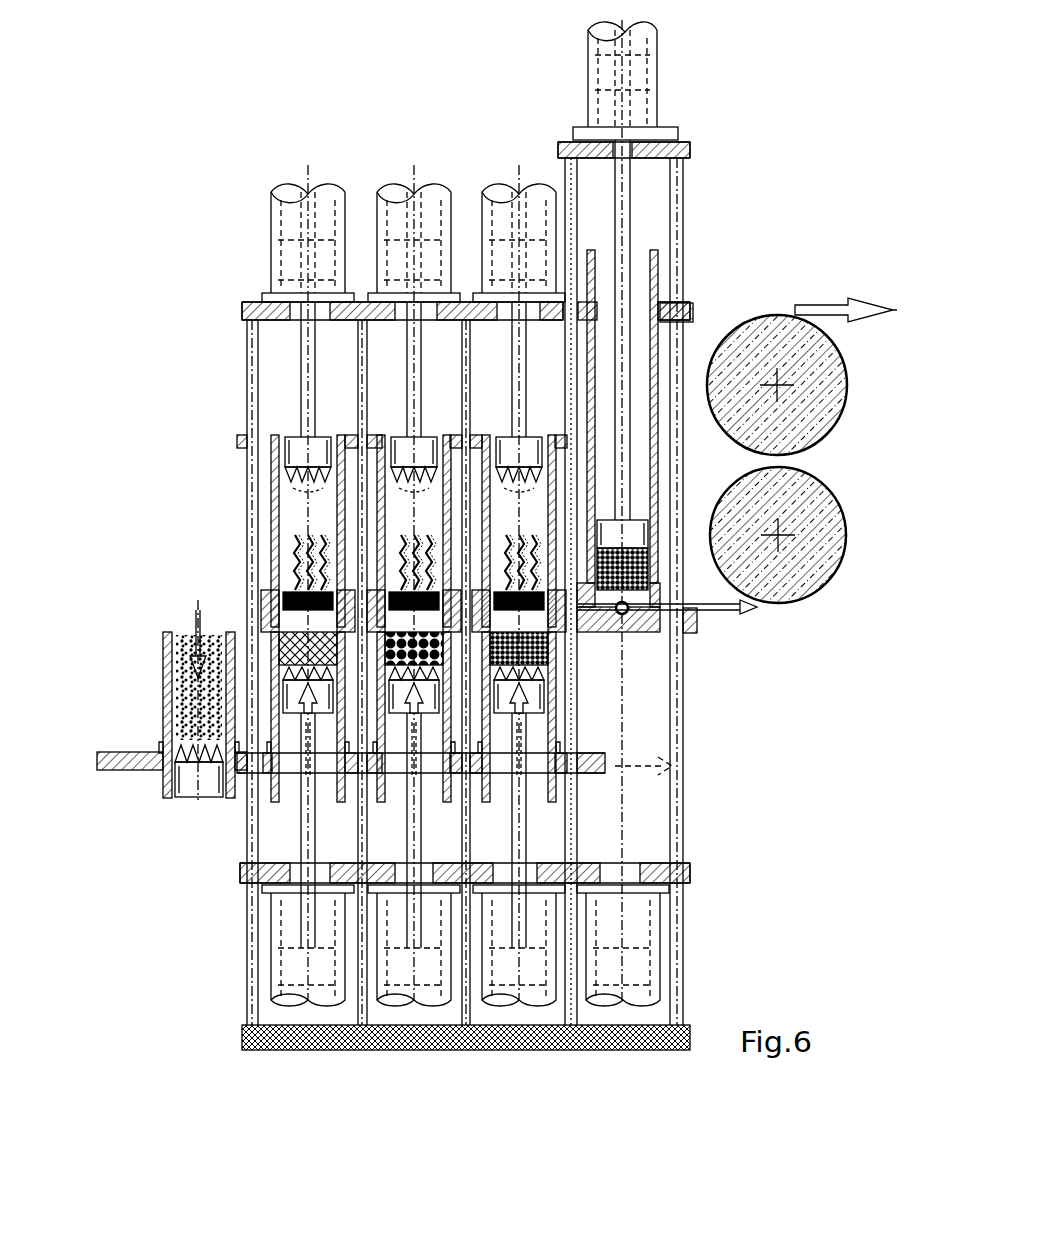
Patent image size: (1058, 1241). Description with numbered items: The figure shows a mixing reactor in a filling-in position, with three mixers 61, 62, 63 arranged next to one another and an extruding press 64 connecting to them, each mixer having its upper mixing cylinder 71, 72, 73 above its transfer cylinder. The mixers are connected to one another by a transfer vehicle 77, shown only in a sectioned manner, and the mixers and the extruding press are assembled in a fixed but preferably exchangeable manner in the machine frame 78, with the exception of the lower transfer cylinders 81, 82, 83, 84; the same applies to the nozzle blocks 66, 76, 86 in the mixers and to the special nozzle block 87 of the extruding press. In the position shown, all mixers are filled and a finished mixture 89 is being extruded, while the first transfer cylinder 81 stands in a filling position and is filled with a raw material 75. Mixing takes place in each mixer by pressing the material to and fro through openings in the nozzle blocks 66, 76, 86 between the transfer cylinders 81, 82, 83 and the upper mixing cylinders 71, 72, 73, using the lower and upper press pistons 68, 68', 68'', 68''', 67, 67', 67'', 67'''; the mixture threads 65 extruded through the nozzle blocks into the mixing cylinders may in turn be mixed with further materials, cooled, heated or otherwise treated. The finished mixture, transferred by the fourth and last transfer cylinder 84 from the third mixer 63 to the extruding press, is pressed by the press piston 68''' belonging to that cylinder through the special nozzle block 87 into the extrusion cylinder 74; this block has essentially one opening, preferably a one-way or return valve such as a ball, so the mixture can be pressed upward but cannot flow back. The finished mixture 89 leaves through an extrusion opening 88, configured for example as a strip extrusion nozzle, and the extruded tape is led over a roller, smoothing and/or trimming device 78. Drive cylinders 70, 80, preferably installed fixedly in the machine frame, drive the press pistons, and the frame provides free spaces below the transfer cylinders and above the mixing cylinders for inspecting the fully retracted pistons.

The mixer 61 is at (283, 130).
The mixer 62 is at (437, 104).
The mixer 63 is at (508, 102).
The extruding press 64 is at (690, 42).
The mixture threads 65 is at (300, 548).
The nozzle block 66 is at (270, 607).
The upper press piston 67 is at (251, 459).
The upper press piston 67' is at (420, 433).
The upper press piston 67'' is at (526, 432).
The upper press piston 67''' is at (665, 502).
The lower press piston 68 is at (199, 813).
The lower press piston 68' is at (302, 807).
The lower press piston 68'' is at (408, 807).
The lower press piston 68''' is at (511, 807).
The drive cylinder 70 is at (615, 976).
The tube first station 71 is at (277, 497).
The tube second station 72 is at (375, 498).
The tube third station 73 is at (478, 493).
The extrusion cylinder 74 is at (655, 355).
The raw material 75 is at (185, 640).
The nozzle block 76 is at (292, 597).
The transfer vehicle 77 is at (148, 768).
The machine frame 78 is at (805, 497).
The drive cylinder 80 is at (403, 198).
The transfer cylinder 81 is at (165, 700).
The transfer cylinder 82 is at (338, 735).
The transfer cylinder 83 is at (444, 735).
The transfer cylinder 84 is at (550, 797).
The nozzle block 86 is at (560, 650).
The special nozzle block 87 is at (640, 632).
The extrusion opening 88 is at (675, 607).
The finished mixture 89 is at (650, 566).